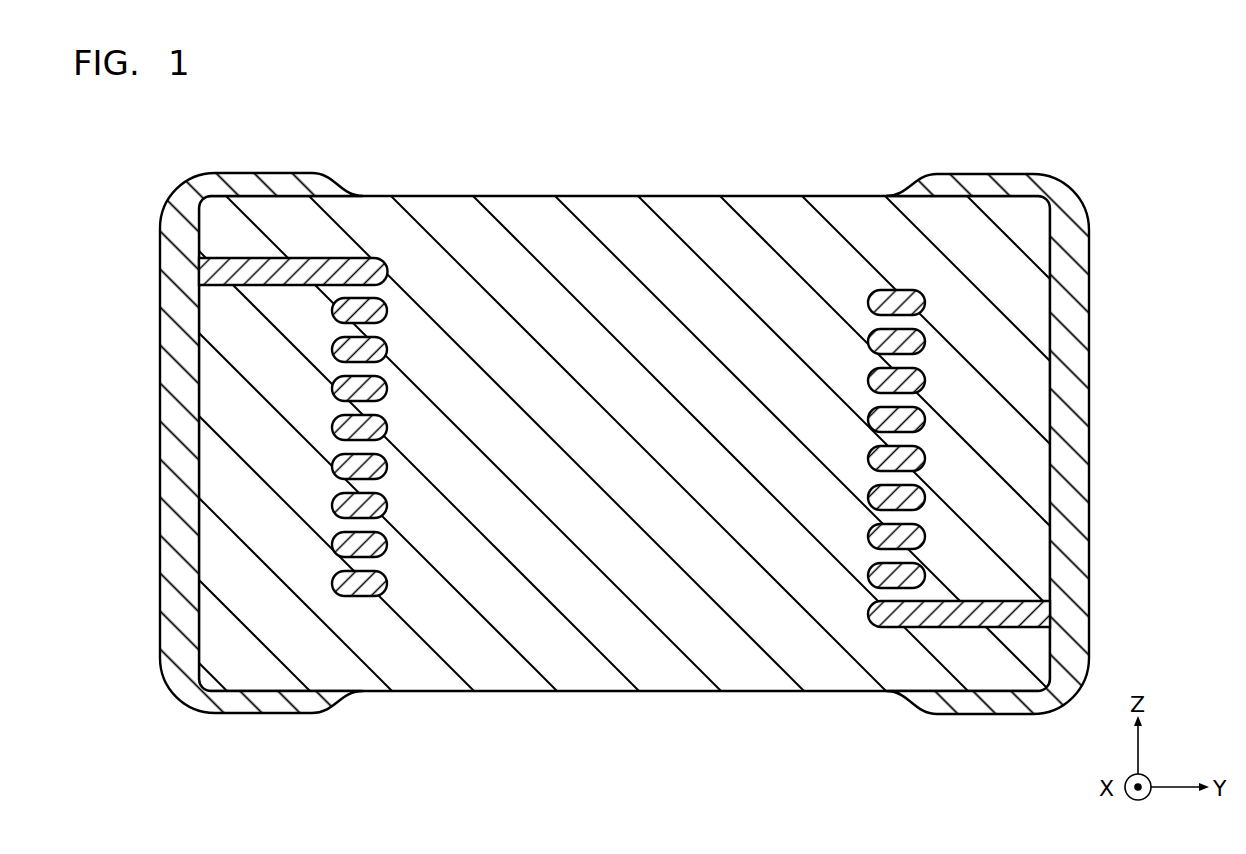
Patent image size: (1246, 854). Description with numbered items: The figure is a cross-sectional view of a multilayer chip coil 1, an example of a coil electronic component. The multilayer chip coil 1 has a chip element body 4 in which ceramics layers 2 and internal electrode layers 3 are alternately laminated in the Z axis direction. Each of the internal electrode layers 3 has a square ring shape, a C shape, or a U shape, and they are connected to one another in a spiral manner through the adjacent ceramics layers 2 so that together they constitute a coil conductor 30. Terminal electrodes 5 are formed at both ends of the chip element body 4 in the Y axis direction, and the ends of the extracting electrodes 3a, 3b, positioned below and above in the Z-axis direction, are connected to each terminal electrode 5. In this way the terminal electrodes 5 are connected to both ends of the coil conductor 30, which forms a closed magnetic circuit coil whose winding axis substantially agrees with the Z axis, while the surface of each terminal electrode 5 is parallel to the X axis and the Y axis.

The multilayer chip coil 1 is at (623, 428).
The ceramics layers 2 is at (902, 437).
The internal electrode layers 3 is at (903, 535).
The extracting electrode 3a is at (979, 627).
The extracting electrode 3b is at (295, 268).
The chip element body 4 is at (708, 196).
The terminal electrodes 5 is at (185, 430).
The coil conductor 30 is at (675, 445).